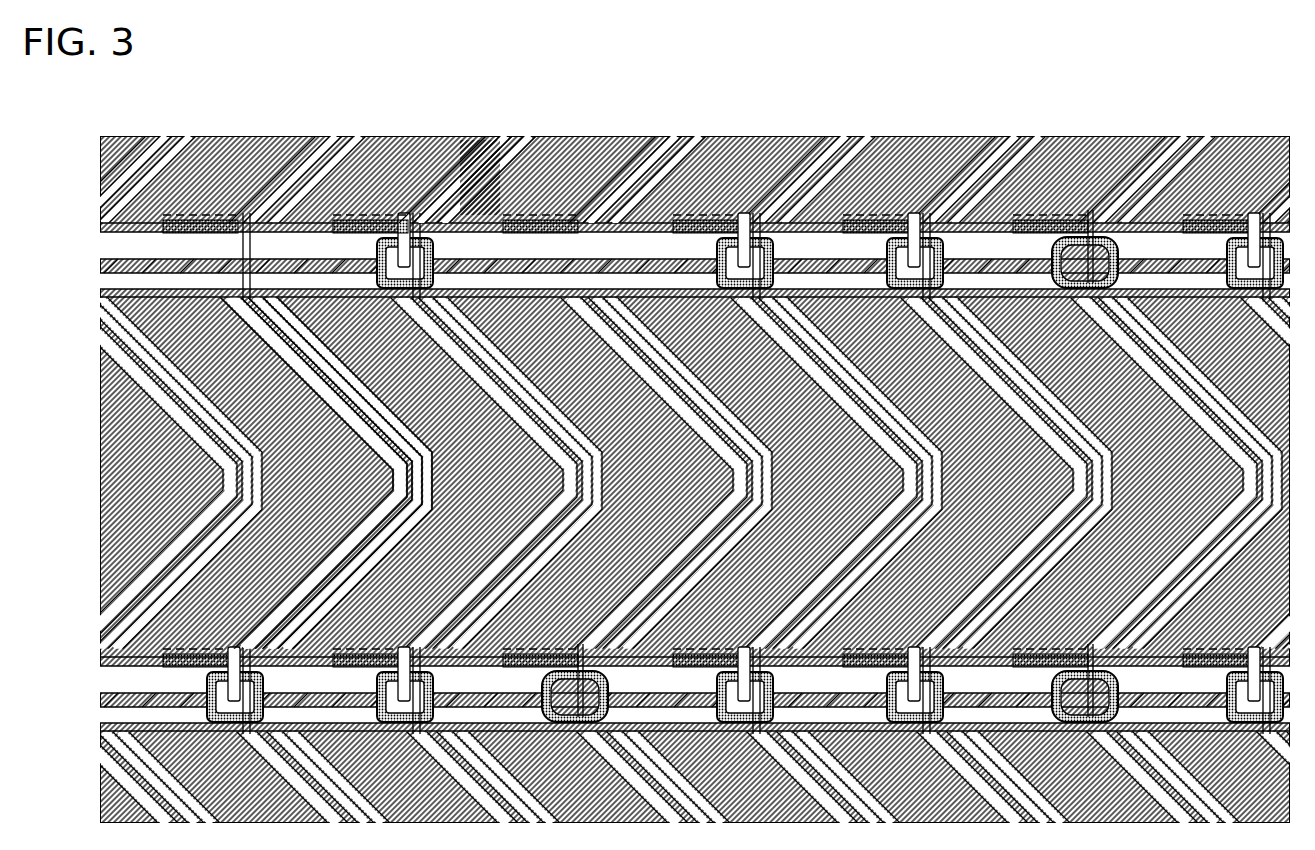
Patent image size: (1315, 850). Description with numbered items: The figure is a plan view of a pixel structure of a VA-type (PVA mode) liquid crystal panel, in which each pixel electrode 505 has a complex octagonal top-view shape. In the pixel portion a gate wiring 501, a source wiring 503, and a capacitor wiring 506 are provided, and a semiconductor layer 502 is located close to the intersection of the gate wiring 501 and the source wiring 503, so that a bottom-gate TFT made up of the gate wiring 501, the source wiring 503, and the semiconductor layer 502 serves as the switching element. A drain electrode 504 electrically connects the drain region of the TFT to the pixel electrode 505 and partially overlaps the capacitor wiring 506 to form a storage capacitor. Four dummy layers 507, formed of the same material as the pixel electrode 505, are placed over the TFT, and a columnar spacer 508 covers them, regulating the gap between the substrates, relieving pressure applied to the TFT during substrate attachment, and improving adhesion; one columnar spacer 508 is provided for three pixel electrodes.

The gate wiring 501 is at (247, 232).
The semiconductor layer 502 is at (443, 225).
The source wiring 503 is at (497, 190).
The drain electrode 504 is at (377, 213).
The pixel electrode 505 is at (353, 330).
The capacitor wiring 506 is at (285, 267).
The dummy layer 507 is at (578, 237).
The columnar spacer 508 is at (630, 220).